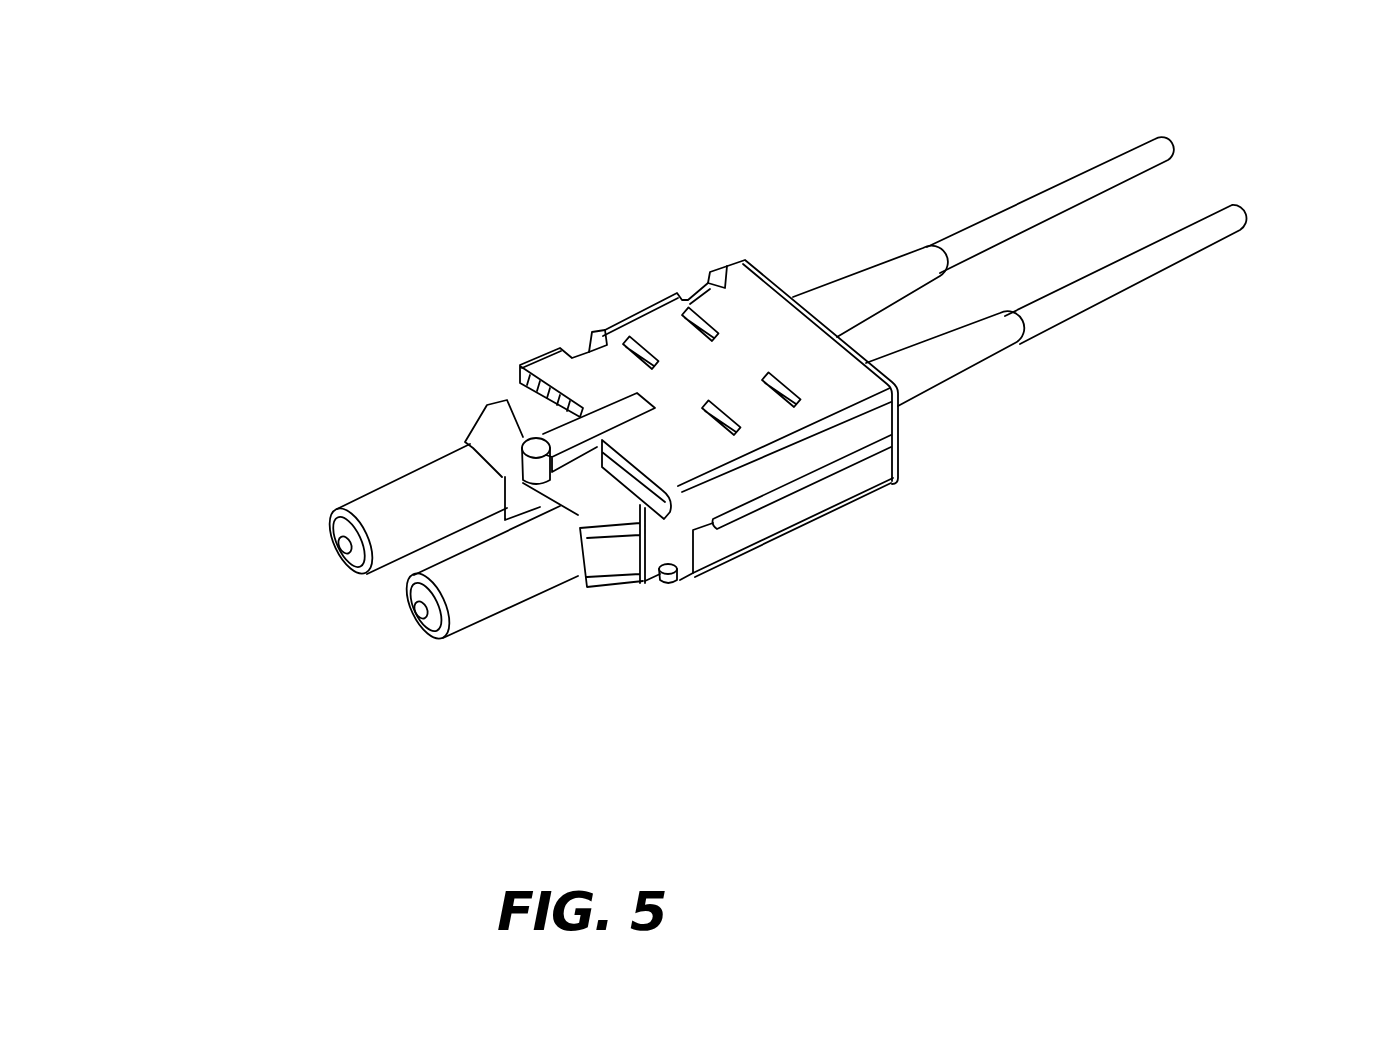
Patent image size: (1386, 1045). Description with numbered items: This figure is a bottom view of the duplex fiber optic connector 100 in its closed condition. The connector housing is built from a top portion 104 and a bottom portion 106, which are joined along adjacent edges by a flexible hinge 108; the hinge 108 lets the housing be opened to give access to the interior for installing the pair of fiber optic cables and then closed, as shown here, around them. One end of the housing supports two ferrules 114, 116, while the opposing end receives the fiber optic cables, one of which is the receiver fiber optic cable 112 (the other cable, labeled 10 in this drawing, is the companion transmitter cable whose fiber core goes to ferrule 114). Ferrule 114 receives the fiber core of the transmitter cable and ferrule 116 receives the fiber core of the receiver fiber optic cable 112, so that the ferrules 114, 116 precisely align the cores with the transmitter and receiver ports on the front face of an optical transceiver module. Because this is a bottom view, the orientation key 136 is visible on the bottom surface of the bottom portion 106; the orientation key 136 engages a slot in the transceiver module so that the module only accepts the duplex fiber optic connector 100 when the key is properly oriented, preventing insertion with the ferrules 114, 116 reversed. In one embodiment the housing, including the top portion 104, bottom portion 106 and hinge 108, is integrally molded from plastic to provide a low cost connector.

The duplex fiber optic connector 100 is at (288, 146).
The first optical fiber cable 10 is at (1098, 163).
The receiver fiber optic cable 112 is at (1168, 268).
The bottom portion 106 is at (743, 295).
The top portion 104 is at (753, 546).
The flexible hinge 108 is at (846, 481).
The orientation key 136 is at (536, 422).
The ferrule 114 is at (267, 574).
The ferrule 116 is at (371, 639).